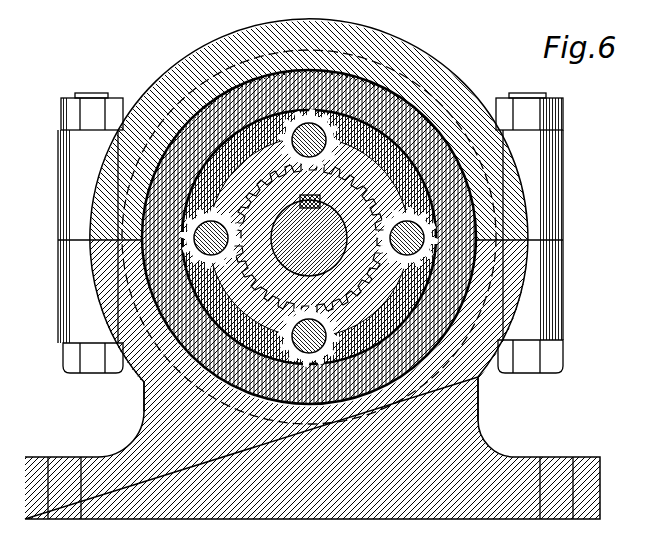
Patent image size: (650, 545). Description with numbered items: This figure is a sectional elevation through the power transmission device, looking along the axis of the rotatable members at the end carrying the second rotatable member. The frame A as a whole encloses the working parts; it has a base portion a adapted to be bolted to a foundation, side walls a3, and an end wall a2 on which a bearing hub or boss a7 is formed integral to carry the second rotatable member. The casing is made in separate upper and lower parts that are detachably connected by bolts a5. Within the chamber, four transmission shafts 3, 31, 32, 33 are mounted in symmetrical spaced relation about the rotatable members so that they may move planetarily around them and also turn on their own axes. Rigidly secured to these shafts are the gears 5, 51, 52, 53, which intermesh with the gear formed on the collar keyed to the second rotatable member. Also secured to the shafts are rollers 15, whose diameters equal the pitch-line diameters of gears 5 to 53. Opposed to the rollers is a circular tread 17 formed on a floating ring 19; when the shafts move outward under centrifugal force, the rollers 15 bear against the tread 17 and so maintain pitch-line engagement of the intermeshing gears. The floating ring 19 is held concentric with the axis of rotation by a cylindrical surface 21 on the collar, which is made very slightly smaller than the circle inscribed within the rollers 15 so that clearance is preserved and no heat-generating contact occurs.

The circular tread 17 is at (222, 131).
The side walls a3 is at (392, 32).
The floating ring 19 is at (393, 100).
The bearing hub or boss a7 is at (355, 160).
The rollers 15 is at (423, 203).
The cylindrical surface 21 is at (363, 183).
The transmission shaft 3 is at (335, 116).
The transmission shaft 31 is at (428, 219).
The transmission shaft 32 is at (292, 358).
The transmission shaft 33 is at (193, 262).
The gear 5 is at (314, 110).
The gear 51 is at (428, 239).
The gear 52 is at (316, 357).
The gear 53 is at (178, 214).
The bolts a5 is at (538, 90).
The end wall a2 is at (555, 220).
The frame A is at (489, 425).
The base portion a is at (404, 511).